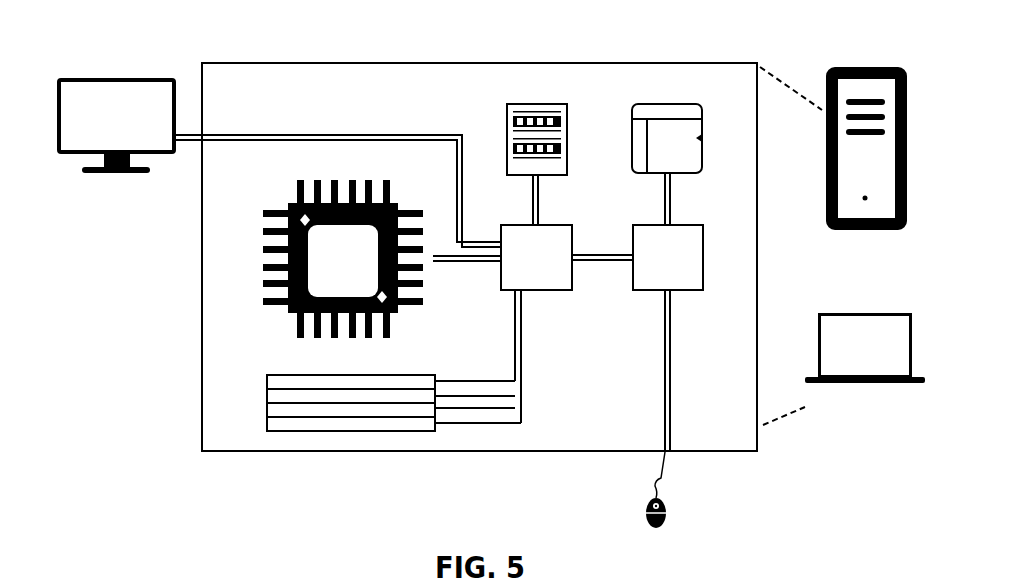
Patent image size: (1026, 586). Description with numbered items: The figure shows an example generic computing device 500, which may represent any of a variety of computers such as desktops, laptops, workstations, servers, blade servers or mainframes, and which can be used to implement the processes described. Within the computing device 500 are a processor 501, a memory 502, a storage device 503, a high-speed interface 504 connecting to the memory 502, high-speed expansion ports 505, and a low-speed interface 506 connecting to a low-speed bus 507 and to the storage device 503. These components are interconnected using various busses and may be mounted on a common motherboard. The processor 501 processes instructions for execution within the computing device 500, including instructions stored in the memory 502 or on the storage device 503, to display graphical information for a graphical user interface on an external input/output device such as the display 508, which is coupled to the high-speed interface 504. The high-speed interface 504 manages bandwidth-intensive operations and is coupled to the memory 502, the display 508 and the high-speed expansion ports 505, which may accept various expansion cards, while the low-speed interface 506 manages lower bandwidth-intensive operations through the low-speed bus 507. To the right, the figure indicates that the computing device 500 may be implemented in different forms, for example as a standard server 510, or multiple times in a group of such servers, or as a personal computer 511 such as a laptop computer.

The computing device 500 is at (122, 344).
The processor 501 is at (324, 259).
The memory 502 is at (521, 128).
The storage device 503 is at (654, 128).
The high-speed interface 504 is at (567, 324).
The high-speed expansion ports 505 is at (342, 396).
The low-speed interface 506 is at (687, 338).
The low-speed bus 507 is at (622, 490).
The display 508 is at (266, 129).
The standard server 510 is at (841, 182).
The personal computer 511 is at (847, 388).